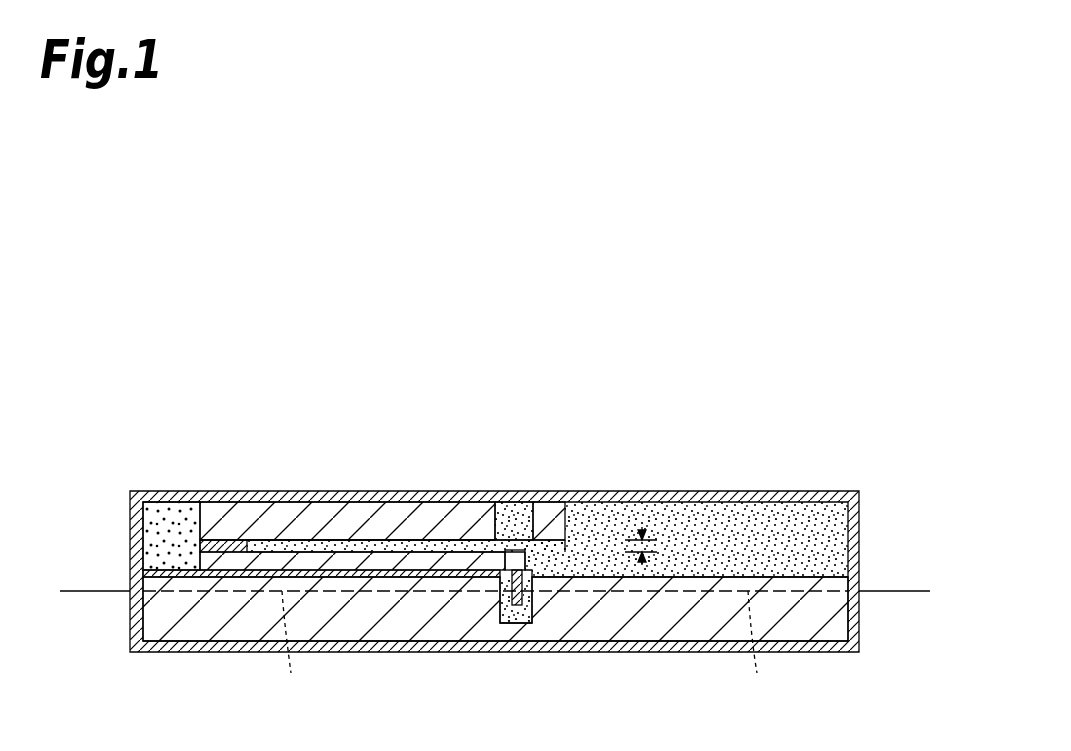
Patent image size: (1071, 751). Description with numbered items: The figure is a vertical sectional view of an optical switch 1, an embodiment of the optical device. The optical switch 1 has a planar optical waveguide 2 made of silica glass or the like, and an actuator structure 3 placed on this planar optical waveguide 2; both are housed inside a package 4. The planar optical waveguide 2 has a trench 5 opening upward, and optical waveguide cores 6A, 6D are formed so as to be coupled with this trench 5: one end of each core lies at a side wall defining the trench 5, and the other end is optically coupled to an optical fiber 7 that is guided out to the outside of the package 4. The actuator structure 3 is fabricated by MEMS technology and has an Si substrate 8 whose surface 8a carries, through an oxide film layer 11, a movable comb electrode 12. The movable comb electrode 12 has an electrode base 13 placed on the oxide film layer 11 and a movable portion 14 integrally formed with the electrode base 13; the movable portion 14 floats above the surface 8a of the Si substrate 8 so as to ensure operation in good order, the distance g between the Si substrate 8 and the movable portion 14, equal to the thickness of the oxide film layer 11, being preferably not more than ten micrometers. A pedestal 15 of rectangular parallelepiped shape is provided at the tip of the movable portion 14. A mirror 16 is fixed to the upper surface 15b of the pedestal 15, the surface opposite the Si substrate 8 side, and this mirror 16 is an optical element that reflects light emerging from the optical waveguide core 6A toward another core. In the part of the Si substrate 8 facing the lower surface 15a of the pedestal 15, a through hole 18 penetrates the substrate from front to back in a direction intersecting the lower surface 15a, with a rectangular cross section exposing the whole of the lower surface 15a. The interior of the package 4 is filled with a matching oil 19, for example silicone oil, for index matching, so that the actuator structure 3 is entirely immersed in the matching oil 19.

The optical switch 1 is at (661, 339).
The planar optical waveguide 2 is at (348, 628).
The actuator structure 3 is at (567, 522).
The package 4 is at (777, 496).
The trench 5 is at (524, 612).
The optical waveguide core 6A is at (287, 651).
The optical waveguide core 6D is at (757, 651).
The optical fiber 7 is at (89, 593).
The Si substrate 8 is at (420, 505).
The surface of Si substrate 8a is at (283, 538).
The oxide film layer 11 is at (234, 548).
The movable comb electrode 12 is at (362, 547).
The electrode base 13 is at (220, 562).
The movable portion 14 is at (396, 566).
The pedestal 15 is at (535, 555).
The lower surface of pedestal 15a is at (514, 545).
The upper surface of pedestal 15b is at (522, 585).
The mirror 16 is at (498, 595).
The through hole 18 is at (508, 540).
The matching oil 19 is at (830, 535).
The distance between Si substrate and movable portion g is at (660, 540).